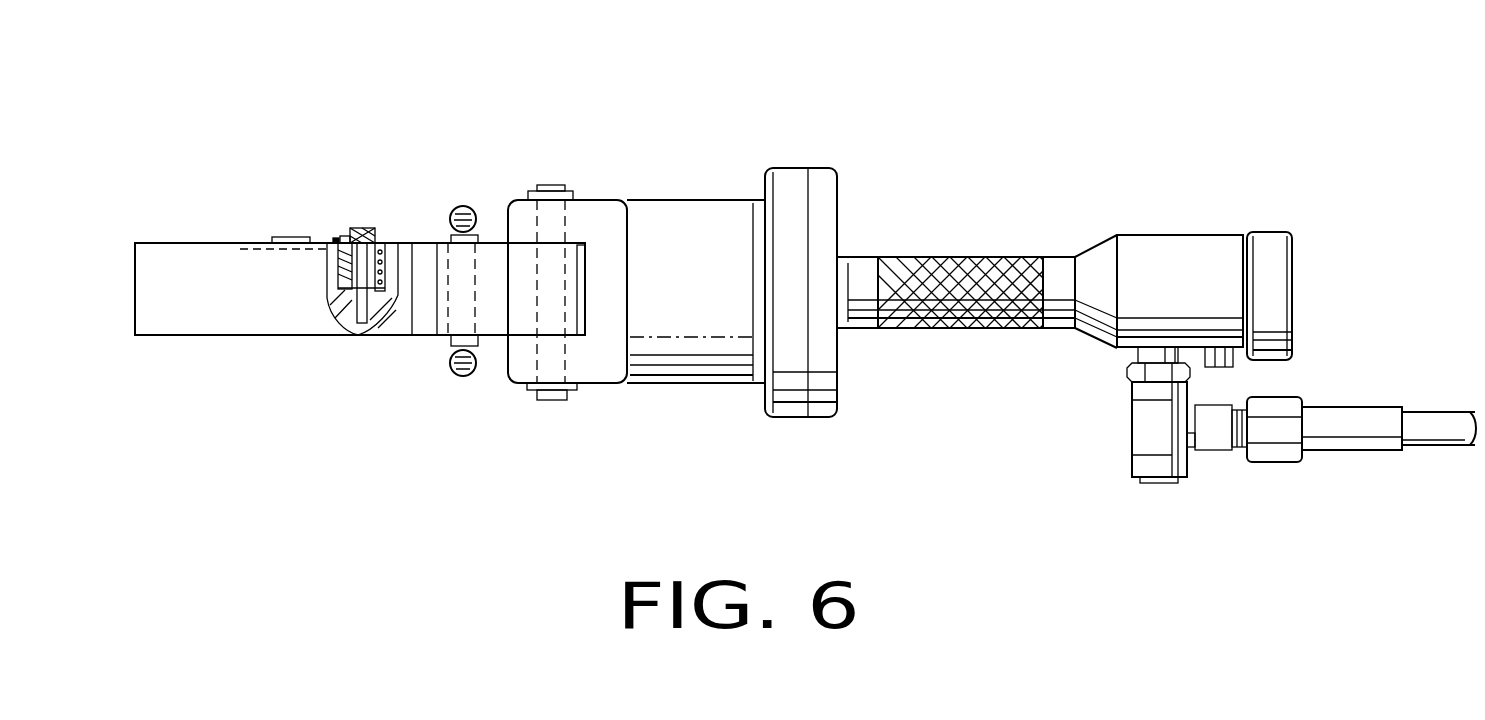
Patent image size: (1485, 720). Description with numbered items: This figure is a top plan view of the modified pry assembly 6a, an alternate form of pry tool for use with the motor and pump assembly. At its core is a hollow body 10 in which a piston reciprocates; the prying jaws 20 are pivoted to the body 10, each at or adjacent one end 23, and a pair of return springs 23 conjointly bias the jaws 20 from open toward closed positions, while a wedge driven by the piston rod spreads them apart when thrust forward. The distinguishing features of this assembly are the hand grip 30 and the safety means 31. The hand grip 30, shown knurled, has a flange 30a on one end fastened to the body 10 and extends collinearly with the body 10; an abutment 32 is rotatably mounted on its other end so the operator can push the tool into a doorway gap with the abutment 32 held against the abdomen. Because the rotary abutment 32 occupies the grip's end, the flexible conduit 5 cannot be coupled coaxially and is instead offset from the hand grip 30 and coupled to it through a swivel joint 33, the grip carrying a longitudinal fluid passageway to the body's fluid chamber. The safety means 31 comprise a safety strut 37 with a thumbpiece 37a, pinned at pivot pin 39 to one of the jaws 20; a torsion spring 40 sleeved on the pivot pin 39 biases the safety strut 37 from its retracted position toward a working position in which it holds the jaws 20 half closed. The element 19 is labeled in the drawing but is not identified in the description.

The modified pry assembly 6a is at (600, 128).
The flexible conduit 5 is at (1358, 422).
The hollow body 10 is at (668, 220).
The clevis pin 19 is at (555, 400).
The prying jaws 20 is at (182, 337).
The return springs 23 is at (468, 212).
The hand grip 30 is at (962, 272).
The flange 30a is at (820, 187).
The safety means 31 is at (340, 205).
The abutment 32 is at (1272, 252).
The swivel joint 33 is at (1163, 483).
The safety strut 37 is at (321, 237).
The thumbpiece 37a is at (272, 237).
The pivot pin 39 is at (364, 232).
The torsion spring 40 is at (327, 282).